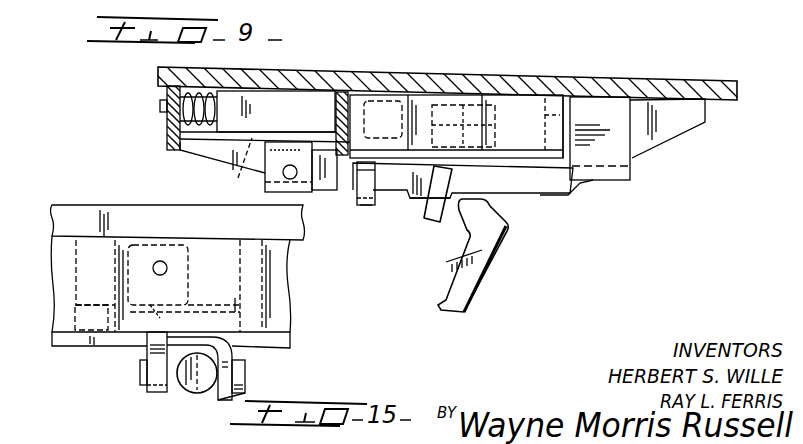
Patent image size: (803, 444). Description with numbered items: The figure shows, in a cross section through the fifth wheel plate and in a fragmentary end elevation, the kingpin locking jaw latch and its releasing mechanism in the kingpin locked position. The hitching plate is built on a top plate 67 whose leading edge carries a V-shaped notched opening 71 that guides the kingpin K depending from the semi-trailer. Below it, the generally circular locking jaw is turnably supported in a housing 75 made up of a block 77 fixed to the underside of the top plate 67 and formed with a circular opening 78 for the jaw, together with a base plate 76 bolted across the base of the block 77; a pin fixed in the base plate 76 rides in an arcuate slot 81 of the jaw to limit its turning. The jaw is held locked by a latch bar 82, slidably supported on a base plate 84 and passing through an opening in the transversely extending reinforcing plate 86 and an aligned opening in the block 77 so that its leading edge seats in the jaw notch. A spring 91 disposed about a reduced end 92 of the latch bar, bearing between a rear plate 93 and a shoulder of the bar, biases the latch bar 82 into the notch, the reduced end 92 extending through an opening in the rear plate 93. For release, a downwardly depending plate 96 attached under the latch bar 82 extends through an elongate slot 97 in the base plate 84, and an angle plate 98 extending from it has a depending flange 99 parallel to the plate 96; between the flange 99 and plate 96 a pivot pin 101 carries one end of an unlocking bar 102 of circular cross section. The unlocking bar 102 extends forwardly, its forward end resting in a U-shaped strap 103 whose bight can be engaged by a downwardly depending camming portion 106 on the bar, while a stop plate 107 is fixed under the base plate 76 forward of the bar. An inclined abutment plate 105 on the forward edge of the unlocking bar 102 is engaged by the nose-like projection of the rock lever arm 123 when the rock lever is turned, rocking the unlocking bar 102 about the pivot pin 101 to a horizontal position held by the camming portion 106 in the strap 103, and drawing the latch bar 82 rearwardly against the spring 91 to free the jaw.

In FIG. 9, the V-shaped notched opening 71 is at (665, 79).
In FIG. 9, the kingpin K is at (484, 74).
In FIG. 9, the housing 75 is at (530, 194).
In FIG. 9, the base plate 76 is at (520, 155).
In FIG. 9, the block 77 is at (565, 100).
In FIG. 9, the circular opening 78 is at (532, 75).
In FIG. 9, the arcuate slot 81 is at (226, 151).
In FIG. 9, the latch bar 82 is at (267, 100).
In FIG. 15, the latch bar 82 is at (147, 257).
In FIG. 9, the base plate 84 is at (197, 137).
In FIG. 9, the reinforcing plate 86 is at (346, 93).
In FIG. 15, the reinforcing plate 86 is at (82, 340).
In FIG. 9, the spring 91 is at (195, 97).
In FIG. 9, the reduced end 92 is at (161, 107).
In FIG. 15, the reduced end 92 is at (167, 268).
In FIG. 9, the rear plate 93 is at (168, 148).
In FIG. 15, the rear plate 93 is at (285, 278).
In FIG. 9, the depending plate 96 is at (272, 184).
In FIG. 15, the depending plate 96 is at (147, 357).
In FIG. 9, the elongate slot 97 is at (232, 165).
In FIG. 15, the elongate slot 97 is at (158, 298).
In FIG. 15, the angle plate 98 is at (221, 295).
In FIG. 15, the flange 99 is at (240, 398).
In FIG. 9, the pivot pin 101 is at (291, 180).
In FIG. 15, the pivot pin 101 is at (245, 372).
In FIG. 9, the unlocking bar 102 is at (377, 166).
In FIG. 15, the unlocking bar 102 is at (197, 393).
In FIG. 9, the U-shaped strap 103 is at (368, 206).
In FIG. 9, the inclined abutment plate 105 is at (435, 218).
In FIG. 9, the camming portion 106 is at (417, 203).
In FIG. 9, the stop plate 107 is at (458, 167).
In FIG. 9, the lever arm 123 is at (478, 270).
In FIG. 15, the top plate 67 is at (108, 213).